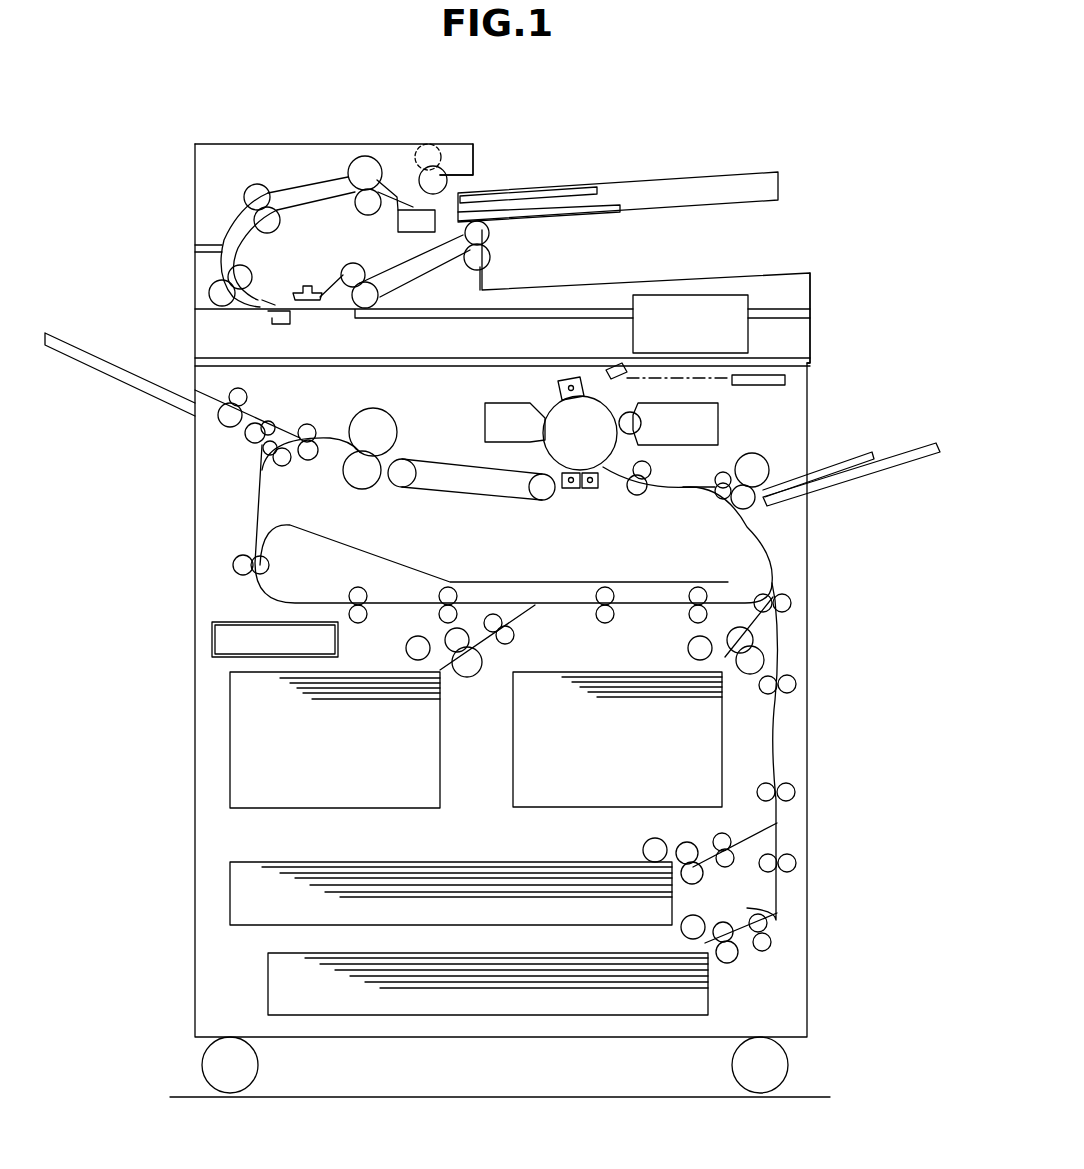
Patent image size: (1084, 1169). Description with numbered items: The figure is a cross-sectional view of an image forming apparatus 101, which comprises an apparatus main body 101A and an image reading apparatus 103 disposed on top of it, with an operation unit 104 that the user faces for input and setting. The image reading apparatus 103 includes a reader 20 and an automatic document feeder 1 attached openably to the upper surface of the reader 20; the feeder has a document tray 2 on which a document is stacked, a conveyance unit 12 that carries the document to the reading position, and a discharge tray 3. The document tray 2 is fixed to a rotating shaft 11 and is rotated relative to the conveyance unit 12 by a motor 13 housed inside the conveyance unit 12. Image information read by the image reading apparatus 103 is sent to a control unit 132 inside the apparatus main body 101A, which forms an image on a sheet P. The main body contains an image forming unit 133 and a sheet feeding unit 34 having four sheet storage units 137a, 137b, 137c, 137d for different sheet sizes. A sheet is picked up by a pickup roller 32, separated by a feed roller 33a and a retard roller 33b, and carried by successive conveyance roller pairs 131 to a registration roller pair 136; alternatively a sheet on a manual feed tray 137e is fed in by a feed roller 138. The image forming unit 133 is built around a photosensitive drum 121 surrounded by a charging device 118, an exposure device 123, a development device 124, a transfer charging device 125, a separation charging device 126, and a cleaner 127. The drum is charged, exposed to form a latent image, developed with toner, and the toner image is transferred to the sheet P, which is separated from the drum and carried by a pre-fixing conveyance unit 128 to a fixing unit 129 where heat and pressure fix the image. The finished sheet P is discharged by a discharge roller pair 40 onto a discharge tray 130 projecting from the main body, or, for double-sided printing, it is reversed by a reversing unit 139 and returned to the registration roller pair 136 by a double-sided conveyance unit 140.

The automatic document feeder 1 is at (780, 143).
The document tray 2 is at (636, 178).
The discharge tray 3 is at (774, 285).
The rotating shaft 11 is at (597, 195).
The conveyance unit 12 is at (245, 240).
The motor 13 is at (413, 208).
The reader 20 is at (810, 343).
The pickup roller 32 is at (406, 648).
The feed roller 33a is at (447, 632).
The retard roller 33b is at (471, 678).
The sheet feeding unit 34 is at (778, 582).
The discharge roller pair 40 is at (227, 435).
The image forming apparatus 101 is at (908, 412).
The apparatus main body 101A is at (915, 647).
The image reading apparatus 103 is at (473, 155).
The operation unit 104 is at (705, 295).
The charging device 118 is at (569, 380).
The photosensitive drum 121 is at (552, 407).
The exposure device 123 is at (785, 381).
The development device 124 is at (718, 420).
The transfer charging device 125 is at (588, 490).
The separation charging device 126 is at (569, 490).
The cleaner 127 is at (485, 418).
The pre-fixing conveyance unit 128 is at (470, 493).
The fixing unit 129 is at (350, 415).
The discharge tray 130 is at (125, 380).
The conveyance roller pair 131 is at (513, 632).
The control unit 132 is at (212, 640).
The image forming unit 133 is at (533, 458).
The registration roller pair 136 is at (640, 495).
The sheet storage unit 137a is at (268, 982).
The sheet storage unit 137b is at (230, 893).
The sheet storage unit 137c is at (230, 733).
The sheet storage unit 137d is at (723, 753).
The manual feed tray 137e is at (900, 465).
The feed roller 138 is at (770, 462).
The reversing unit 139 is at (380, 560).
The double-sided conveyance unit 140 is at (262, 595).
The sheet P is at (608, 672).